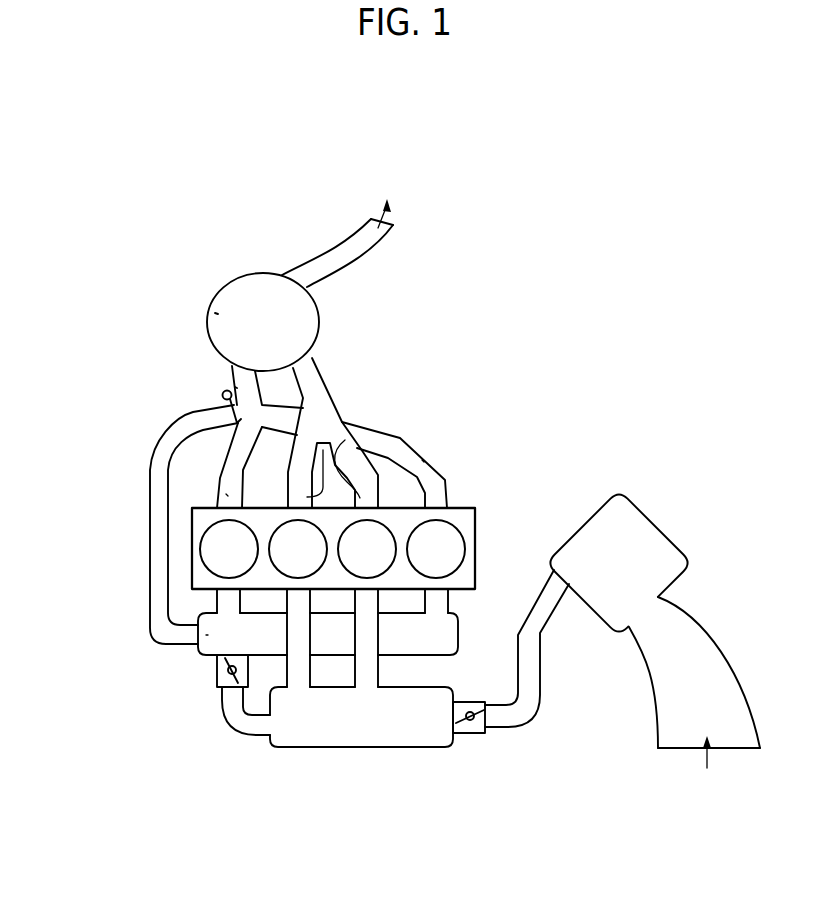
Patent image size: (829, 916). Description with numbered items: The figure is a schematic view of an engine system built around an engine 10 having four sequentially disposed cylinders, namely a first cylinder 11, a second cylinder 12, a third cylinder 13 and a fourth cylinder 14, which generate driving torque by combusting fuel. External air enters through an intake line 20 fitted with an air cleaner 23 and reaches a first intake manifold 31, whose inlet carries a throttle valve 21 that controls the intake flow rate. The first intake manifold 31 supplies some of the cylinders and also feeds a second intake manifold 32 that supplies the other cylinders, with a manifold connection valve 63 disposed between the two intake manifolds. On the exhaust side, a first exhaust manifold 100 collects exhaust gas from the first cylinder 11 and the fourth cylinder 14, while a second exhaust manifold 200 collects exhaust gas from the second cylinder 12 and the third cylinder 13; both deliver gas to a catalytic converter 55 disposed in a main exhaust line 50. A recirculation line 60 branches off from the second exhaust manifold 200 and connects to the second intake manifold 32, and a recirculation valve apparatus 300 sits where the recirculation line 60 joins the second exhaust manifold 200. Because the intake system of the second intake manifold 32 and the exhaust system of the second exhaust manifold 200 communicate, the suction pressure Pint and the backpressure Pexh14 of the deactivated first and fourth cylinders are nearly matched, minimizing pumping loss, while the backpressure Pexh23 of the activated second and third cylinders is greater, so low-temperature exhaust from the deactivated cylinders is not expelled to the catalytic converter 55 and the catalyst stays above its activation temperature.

The engine 10 is at (173, 553).
The first cylinder 11 is at (200, 536).
The second cylinder 12 is at (278, 570).
The third cylinder 13 is at (381, 577).
The fourth cylinder 14 is at (463, 529).
The intake line 20 is at (525, 710).
The throttle valve 21 is at (467, 733).
The air cleaner 23 is at (623, 507).
The first intake manifold 31 is at (315, 748).
The second intake manifold 32 is at (210, 657).
The main exhaust line 50 is at (320, 260).
The catalytic converter 55 is at (217, 293).
The recirculation line 60 is at (165, 455).
The manifold connection valve 63 is at (217, 687).
The first exhaust manifold 100 is at (323, 450).
The second exhaust manifold 200 is at (228, 495).
The recirculation valve apparatus 300 is at (230, 412).
The backpressure of the second and third cylinders Pexh23 is at (215, 313).
The backpressure of the first and fourth cylinders Pexh14 is at (235, 387).
The suction pressure Pint is at (208, 635).